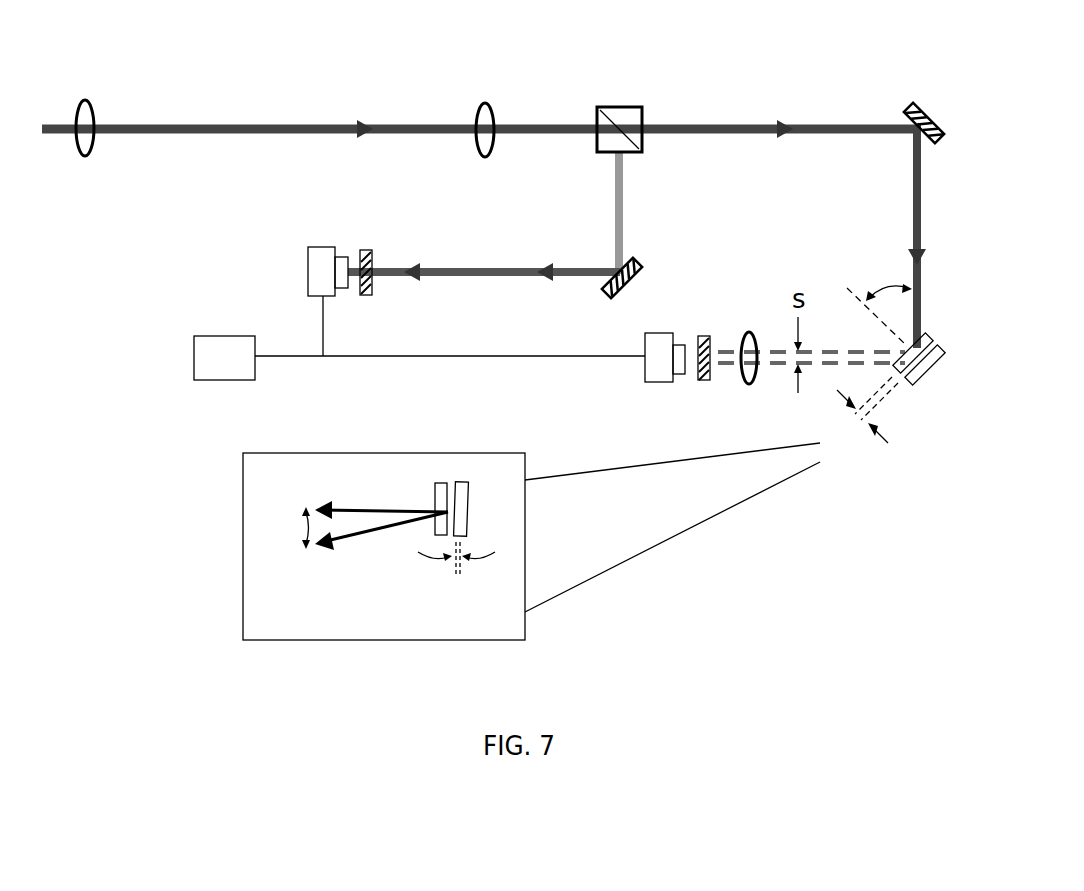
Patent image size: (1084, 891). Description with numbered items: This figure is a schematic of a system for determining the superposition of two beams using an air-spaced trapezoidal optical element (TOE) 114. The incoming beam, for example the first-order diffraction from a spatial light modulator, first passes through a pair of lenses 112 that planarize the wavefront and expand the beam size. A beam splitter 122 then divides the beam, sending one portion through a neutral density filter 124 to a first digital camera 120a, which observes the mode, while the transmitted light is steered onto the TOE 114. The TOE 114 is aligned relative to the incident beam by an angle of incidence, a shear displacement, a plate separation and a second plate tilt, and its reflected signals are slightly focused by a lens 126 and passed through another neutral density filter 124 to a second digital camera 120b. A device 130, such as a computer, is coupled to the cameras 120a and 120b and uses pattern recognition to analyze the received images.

The lenses 112 is at (83, 100).
The beam splitter 122 is at (620, 107).
The first digital camera 120a is at (323, 247).
The neutral density filter 124 is at (365, 250).
The device 130 is at (227, 336).
The second digital camera 120b is at (645, 340).
The lens 126 is at (749, 386).
The air-spaced trapezoidal optical element 114 is at (323, 453).